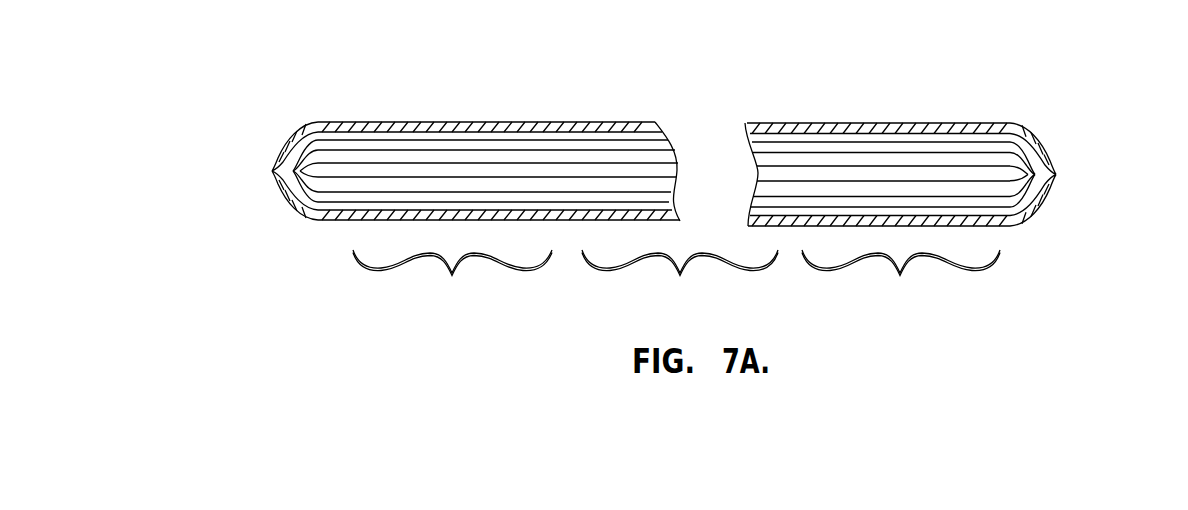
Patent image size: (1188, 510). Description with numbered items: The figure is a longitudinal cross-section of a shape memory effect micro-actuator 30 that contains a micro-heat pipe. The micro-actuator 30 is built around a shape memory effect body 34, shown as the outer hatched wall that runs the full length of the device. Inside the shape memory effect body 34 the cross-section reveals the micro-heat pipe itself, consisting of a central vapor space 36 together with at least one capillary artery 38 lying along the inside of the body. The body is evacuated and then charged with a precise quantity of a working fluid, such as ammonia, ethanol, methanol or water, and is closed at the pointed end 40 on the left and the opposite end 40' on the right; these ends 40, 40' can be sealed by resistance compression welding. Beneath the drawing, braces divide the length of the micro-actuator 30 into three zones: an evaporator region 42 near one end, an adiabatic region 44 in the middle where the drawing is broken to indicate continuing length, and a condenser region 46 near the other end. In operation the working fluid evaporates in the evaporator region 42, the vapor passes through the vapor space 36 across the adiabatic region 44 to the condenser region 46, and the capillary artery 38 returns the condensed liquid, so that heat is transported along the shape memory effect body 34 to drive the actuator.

The shape memory effect micro-actuator 30 is at (648, 182).
The shape memory effect body 34 is at (870, 125).
The vapor space 36 is at (348, 190).
The capillary artery 38 is at (440, 123).
The end 40 is at (236, 209).
The end 40' is at (1075, 140).
The evaporator region 42 is at (452, 281).
The adiabatic region 44 is at (680, 281).
The condenser region 46 is at (901, 281).